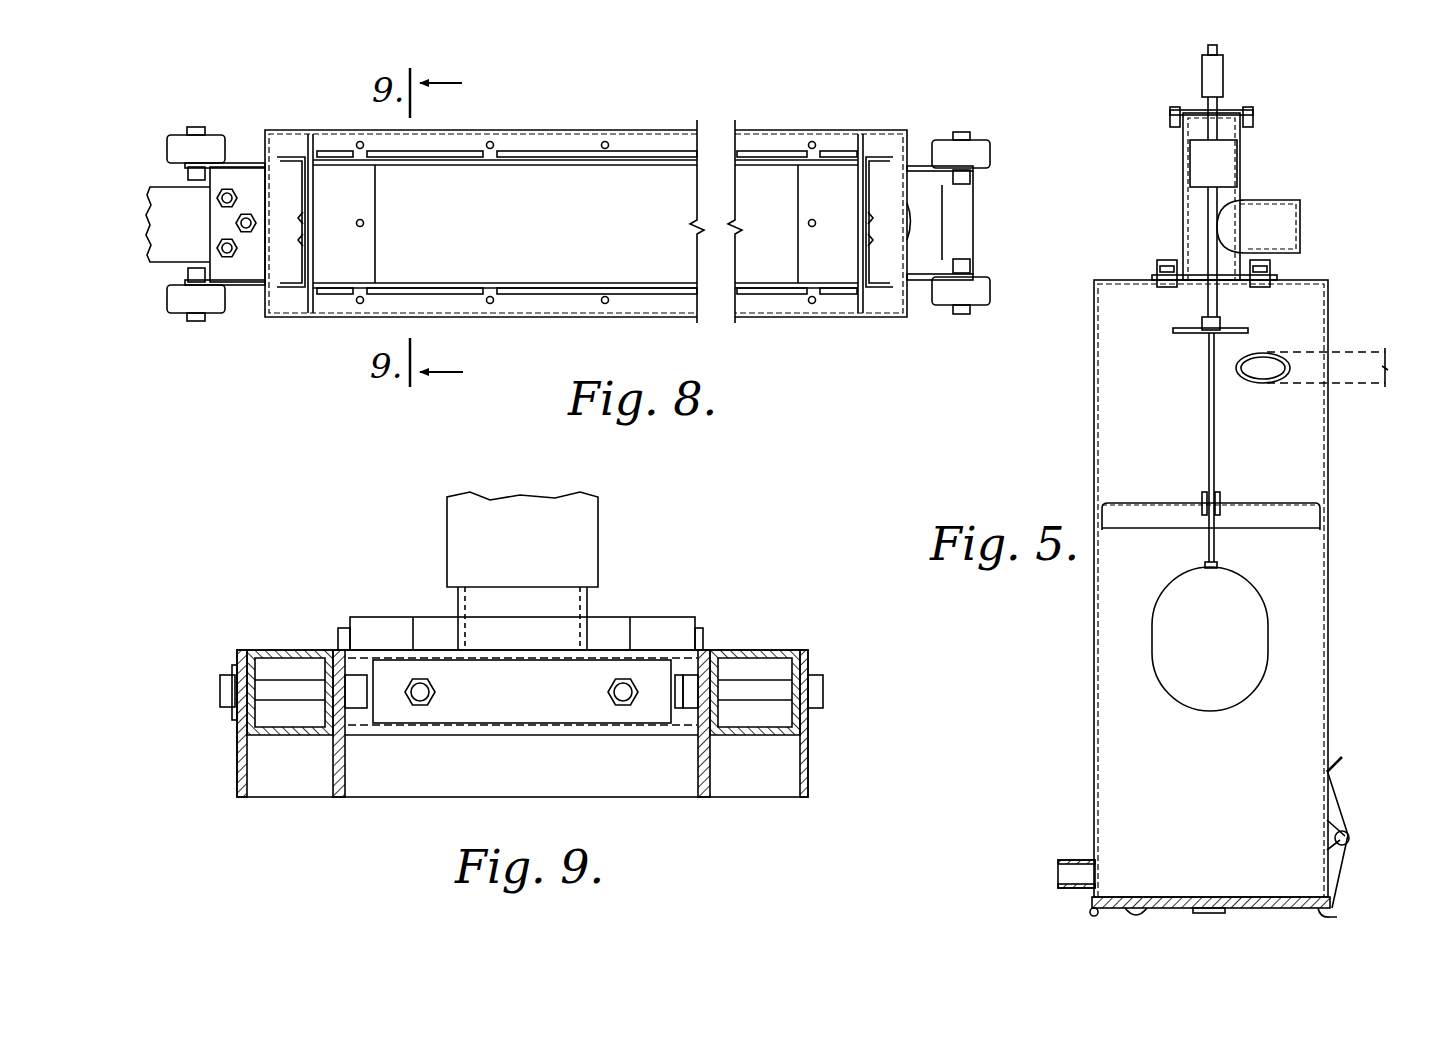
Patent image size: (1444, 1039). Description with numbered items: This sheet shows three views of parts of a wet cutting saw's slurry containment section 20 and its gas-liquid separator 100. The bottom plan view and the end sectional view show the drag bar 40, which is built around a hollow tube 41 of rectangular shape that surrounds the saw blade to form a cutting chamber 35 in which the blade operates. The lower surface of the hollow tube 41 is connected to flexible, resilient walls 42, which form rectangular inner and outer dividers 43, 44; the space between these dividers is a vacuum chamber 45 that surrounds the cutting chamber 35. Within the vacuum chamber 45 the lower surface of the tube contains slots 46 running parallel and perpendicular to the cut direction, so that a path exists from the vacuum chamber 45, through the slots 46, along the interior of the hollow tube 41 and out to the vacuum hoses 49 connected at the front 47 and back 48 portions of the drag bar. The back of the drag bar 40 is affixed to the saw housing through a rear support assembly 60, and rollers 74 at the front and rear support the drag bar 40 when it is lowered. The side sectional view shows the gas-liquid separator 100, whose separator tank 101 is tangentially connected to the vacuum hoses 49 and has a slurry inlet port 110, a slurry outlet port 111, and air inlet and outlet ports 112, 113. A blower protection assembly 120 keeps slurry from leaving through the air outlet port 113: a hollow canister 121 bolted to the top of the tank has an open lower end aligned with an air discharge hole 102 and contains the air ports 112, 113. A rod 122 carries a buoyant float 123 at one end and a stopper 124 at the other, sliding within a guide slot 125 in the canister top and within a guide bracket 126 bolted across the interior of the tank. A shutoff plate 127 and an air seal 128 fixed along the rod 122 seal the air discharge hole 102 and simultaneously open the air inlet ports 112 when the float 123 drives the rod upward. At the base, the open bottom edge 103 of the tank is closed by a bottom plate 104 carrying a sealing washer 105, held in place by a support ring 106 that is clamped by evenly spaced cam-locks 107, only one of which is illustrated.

In FIG. 9, the slurry containment section 20 is at (541, 571).
In FIG. 8, the cutting chamber 35 is at (623, 260).
In FIG. 9, the cutting chamber 35 is at (467, 780).
In FIG. 8, the drag bar 40 is at (760, 318).
In FIG. 9, the drag bar 40 is at (548, 724).
In FIG. 8, the hollow tube 41 is at (853, 293).
In FIG. 9, the hollow tube 41 is at (740, 650).
In FIG. 8, the resilient walls 42 is at (813, 287).
In FIG. 9, the resilient walls 42 is at (698, 765).
In FIG. 8, the inner divider 43 is at (550, 284).
In FIG. 9, the inner divider 43 is at (712, 777).
In FIG. 8, the outer divider 44 is at (562, 310).
In FIG. 9, the outer divider 44 is at (800, 780).
In FIG. 8, the vacuum chamber 45 is at (432, 307).
In FIG. 9, the vacuum chamber 45 is at (793, 775).
In FIG. 8, the slots 46 is at (408, 289).
In FIG. 9, the slots 46 is at (315, 730).
In FIG. 8, the front portion 47 is at (913, 303).
In FIG. 8, the back portion 48 is at (255, 297).
In FIG. 9, the vacuum hoses 49 is at (447, 572).
In FIG. 5, the vacuum hoses 49 is at (1352, 383).
In FIG. 8, the rear support assembly 60 is at (157, 165).
In FIG. 8, the rollers 74 is at (217, 305).
In FIG. 5, the gas-liquid separator 100 is at (1210, 581).
In FIG. 5, the separator tank 101 is at (1328, 560).
In FIG. 5, the air discharge hole 102 is at (1200, 275).
In FIG. 5, the bottom edge 103 is at (1080, 889).
In FIG. 5, the bottom plate 104 is at (1150, 897).
In FIG. 5, the sealing washer 105 is at (1295, 896).
In FIG. 5, the support ring 106 is at (1340, 907).
In FIG. 5, the cam-locks 107 is at (1340, 800).
In FIG. 5, the slurry inlet port 110 is at (1262, 365).
In FIG. 5, the slurry outlet port 111 is at (1072, 870).
In FIG. 5, the air inlet port 112 is at (1186, 165).
In FIG. 5, the air outlet port 113 is at (1300, 222).
In FIG. 5, the blower protection assembly 120 is at (1262, 182).
In FIG. 5, the hollow canister 121 is at (1185, 210).
In FIG. 5, the rod 122 is at (1216, 413).
In FIG. 5, the float 123 is at (1240, 582).
In FIG. 5, the stopper 124 is at (1225, 75).
In FIG. 5, the guide slot 125 is at (1218, 285).
In FIG. 5, the guide bracket 126 is at (1232, 500).
In FIG. 5, the shutoff plate 127 is at (1195, 335).
In FIG. 5, the air seal 128 is at (1240, 165).